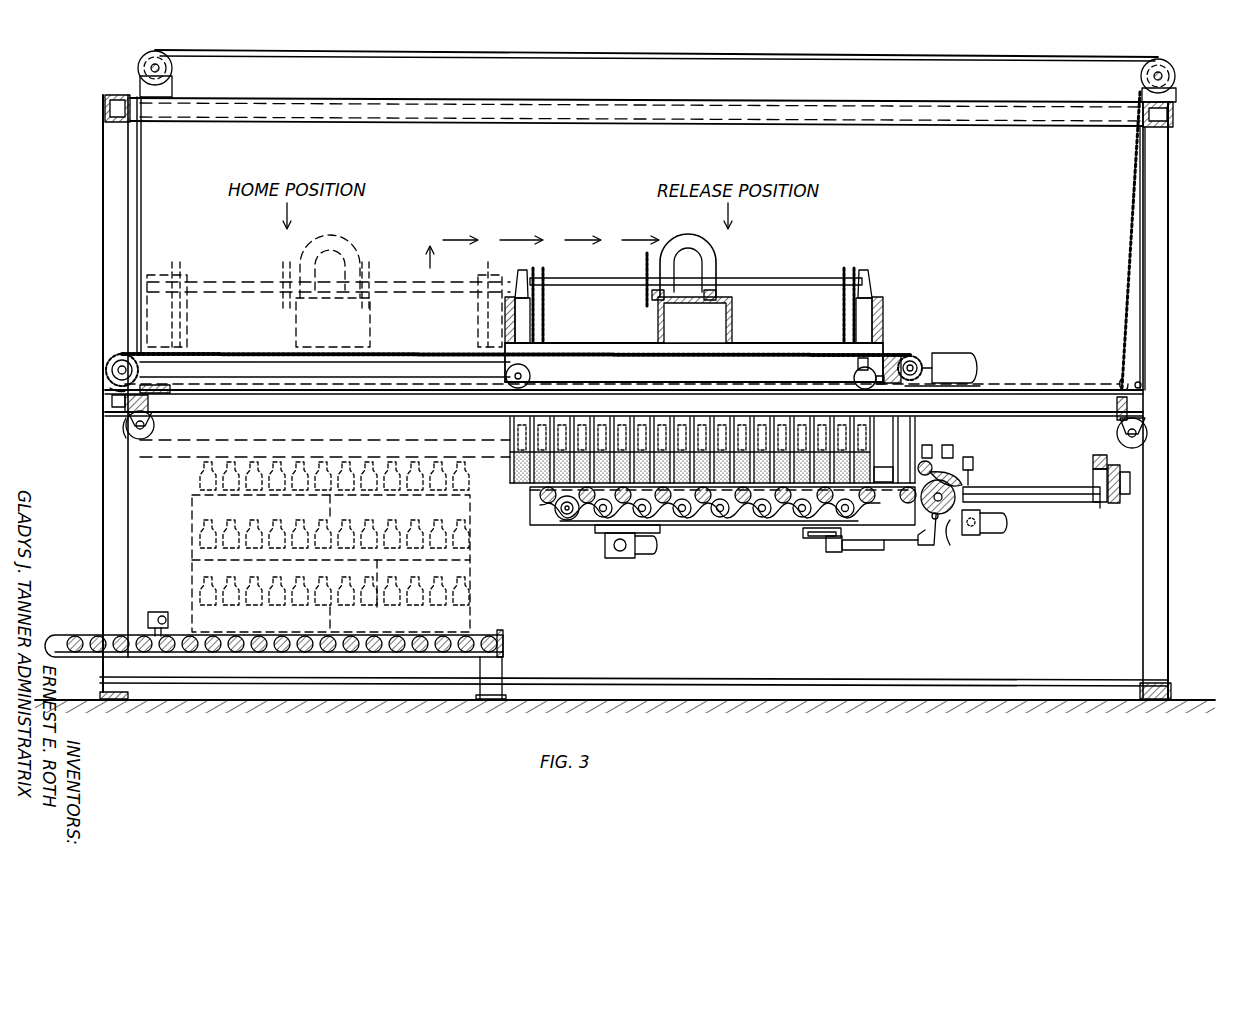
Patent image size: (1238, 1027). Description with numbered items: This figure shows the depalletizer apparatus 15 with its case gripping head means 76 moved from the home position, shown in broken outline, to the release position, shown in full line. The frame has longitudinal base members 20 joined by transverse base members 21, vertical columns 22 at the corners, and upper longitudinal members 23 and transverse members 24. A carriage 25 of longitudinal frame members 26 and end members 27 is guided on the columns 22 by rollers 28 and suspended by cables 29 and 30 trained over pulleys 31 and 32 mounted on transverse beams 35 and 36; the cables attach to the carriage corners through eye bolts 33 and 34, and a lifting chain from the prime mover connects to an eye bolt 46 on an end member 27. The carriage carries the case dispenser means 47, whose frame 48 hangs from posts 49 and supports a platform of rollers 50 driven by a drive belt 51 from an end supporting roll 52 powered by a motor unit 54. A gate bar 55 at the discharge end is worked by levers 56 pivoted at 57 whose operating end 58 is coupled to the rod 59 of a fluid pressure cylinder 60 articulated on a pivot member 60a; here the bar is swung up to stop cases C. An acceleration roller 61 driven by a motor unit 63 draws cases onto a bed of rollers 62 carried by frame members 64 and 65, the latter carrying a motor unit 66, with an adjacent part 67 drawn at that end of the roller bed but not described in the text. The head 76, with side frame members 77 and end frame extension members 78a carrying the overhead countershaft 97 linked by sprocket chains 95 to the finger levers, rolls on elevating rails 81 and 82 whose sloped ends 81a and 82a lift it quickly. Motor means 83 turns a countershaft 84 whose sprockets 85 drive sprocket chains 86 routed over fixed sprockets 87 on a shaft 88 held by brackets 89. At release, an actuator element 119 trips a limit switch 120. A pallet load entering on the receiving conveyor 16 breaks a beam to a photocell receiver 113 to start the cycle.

The depalletizer apparatus 15 is at (90, 228).
The receiving conveyor 16 is at (78, 630).
The longitudinal base members 20 is at (762, 698).
The transverse base members 21 is at (125, 697).
The vertical columns 22 is at (103, 268).
The longitudinal members 23 is at (660, 113).
The transverse members 24 is at (105, 108).
The carriage 25 is at (1022, 368).
The longitudinal frame members 26 is at (448, 400).
The end members 27 is at (160, 405).
The rollers 28 is at (140, 440).
The cables 29 is at (141, 228).
The cables 30 is at (1128, 288).
The pulleys 31 is at (175, 66).
The pulleys 32 is at (1175, 78).
The eye bolts 33 is at (103, 405).
The eye bolts 34 is at (1150, 386).
The transverse beam 35 is at (175, 118).
The transverse beam 36 is at (1176, 94).
The eye bolt 46 is at (1120, 375).
The case dispenser means 47 is at (754, 550).
The frame 48 is at (543, 528).
The posts 49 is at (905, 438).
The rollers 50 is at (740, 520).
The drive belt 51 is at (782, 518).
The end supporting roll 52 is at (572, 518).
The motor unit 54 is at (605, 560).
The gate bar 55 is at (950, 460).
The levers 56 is at (968, 470).
The pivot 57 is at (935, 540).
The operating end 58 is at (905, 545).
The rod 59 is at (868, 550).
The fluid pressure cylinder 60 is at (850, 560).
The pivot member 60a is at (826, 545).
The acceleration roller 61 is at (922, 500).
The rollers 62 is at (1045, 495).
The motor unit 63 is at (990, 533).
The frame member 64 is at (948, 545).
The frame member 65 is at (1108, 508).
The motor unit 66 is at (1130, 472).
The block 67 is at (1093, 478).
The case gripping head means 76 is at (752, 340).
The main side frame members 77 is at (762, 368).
The end frame extension members 78a is at (260, 330).
The elevating rails 81 is at (312, 380).
The sloped ends 81a is at (165, 392).
The elevating rails 82 is at (640, 382).
The sloped ends 82a is at (535, 382).
The motor means 83 is at (970, 358).
The countershaft 84 is at (912, 358).
The sprockets 85 is at (893, 355).
The sprocket chains 86 is at (393, 356).
The fixed sprockets 87 is at (106, 370).
The shaft 88 is at (108, 380).
The brackets 89 is at (122, 425).
The sprocket chains 95 is at (540, 320).
The overhead countershaft 97 is at (388, 282).
The photocell receiver 113 is at (148, 620).
The limit switch actuator element 119 is at (858, 366).
The limit switch 120 is at (878, 385).
The cases C is at (192, 560).